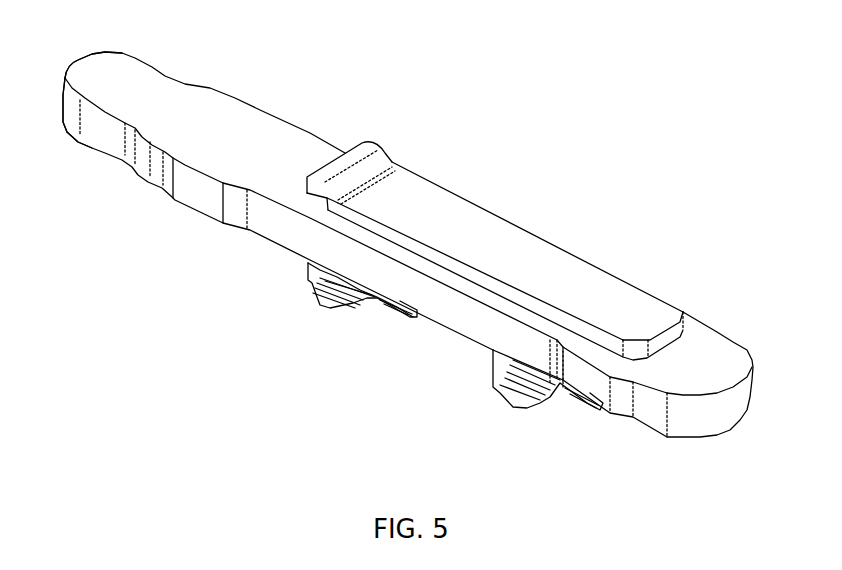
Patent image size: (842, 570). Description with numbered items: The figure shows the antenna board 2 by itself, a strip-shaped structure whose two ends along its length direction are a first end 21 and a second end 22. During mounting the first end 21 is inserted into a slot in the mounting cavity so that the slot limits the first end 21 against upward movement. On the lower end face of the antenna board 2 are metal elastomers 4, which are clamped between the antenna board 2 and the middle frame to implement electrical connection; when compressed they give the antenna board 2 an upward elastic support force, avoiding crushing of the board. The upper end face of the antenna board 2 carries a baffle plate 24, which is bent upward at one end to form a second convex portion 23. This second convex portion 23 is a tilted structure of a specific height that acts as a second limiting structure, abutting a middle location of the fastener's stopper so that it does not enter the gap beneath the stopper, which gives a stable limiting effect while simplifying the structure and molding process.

The antenna board 2 is at (273, 177).
The metal elastomer 4 is at (313, 283).
The first end 21 is at (715, 408).
The second end 22 is at (92, 72).
The second convex portion 23 is at (348, 162).
The baffle plate 24 is at (535, 262).